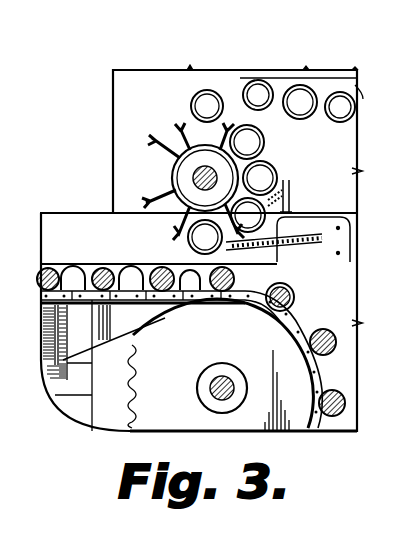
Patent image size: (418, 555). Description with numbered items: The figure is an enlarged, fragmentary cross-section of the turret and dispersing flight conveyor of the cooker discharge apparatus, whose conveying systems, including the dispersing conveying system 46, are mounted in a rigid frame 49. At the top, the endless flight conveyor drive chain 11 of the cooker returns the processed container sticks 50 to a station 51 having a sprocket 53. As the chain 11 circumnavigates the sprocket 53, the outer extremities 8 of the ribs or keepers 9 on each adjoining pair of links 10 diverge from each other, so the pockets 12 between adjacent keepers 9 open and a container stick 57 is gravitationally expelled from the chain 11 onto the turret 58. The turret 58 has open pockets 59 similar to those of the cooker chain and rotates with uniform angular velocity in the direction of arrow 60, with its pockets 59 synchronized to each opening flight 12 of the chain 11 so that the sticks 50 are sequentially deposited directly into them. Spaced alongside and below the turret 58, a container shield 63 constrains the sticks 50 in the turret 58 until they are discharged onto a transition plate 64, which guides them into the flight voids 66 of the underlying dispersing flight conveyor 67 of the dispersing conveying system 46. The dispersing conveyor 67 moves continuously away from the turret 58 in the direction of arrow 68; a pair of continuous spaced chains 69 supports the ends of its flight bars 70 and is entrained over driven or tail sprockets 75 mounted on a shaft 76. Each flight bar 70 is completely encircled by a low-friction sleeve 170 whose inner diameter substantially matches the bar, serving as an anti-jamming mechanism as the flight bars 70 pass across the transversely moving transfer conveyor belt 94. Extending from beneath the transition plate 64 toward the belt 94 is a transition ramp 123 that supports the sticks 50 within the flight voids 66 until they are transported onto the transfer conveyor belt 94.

The outer extremities 8 is at (262, 110).
The ribs or keepers 9 is at (207, 135).
The links 10 is at (355, 107).
The endless flight conveyor drive chain 11 is at (300, 102).
The open pockets 12 is at (212, 77).
The dispersing conveying system 46 is at (364, 298).
The frame 49 is at (357, 380).
The container sticks 50 is at (342, 122).
The station 51 is at (182, 105).
The sprocket 53 is at (357, 84).
The container stick 57 is at (240, 125).
The turret 58 is at (195, 180).
The turret pockets 59 is at (168, 142).
The direction of turret rotation 60 is at (296, 160).
The container shield 63 is at (290, 186).
The transition plate 64 is at (280, 246).
The flight voids 66 is at (190, 272).
The dispersing flight conveyor 67 is at (357, 326).
The direction of dispersing conveyor travel 68 is at (58, 242).
The continuous spaced chains 69 is at (316, 372).
The flight bars 70 is at (296, 300).
The tail sprockets 75 is at (199, 388).
The shaft 76 is at (222, 378).
The transfer conveyor belt 94 is at (44, 330).
The transition ramp 123 is at (130, 326).
The low-friction sleeve 170 is at (294, 283).